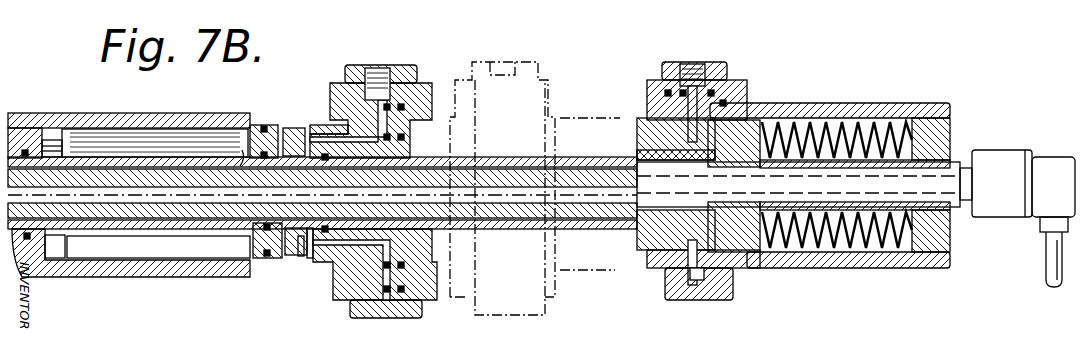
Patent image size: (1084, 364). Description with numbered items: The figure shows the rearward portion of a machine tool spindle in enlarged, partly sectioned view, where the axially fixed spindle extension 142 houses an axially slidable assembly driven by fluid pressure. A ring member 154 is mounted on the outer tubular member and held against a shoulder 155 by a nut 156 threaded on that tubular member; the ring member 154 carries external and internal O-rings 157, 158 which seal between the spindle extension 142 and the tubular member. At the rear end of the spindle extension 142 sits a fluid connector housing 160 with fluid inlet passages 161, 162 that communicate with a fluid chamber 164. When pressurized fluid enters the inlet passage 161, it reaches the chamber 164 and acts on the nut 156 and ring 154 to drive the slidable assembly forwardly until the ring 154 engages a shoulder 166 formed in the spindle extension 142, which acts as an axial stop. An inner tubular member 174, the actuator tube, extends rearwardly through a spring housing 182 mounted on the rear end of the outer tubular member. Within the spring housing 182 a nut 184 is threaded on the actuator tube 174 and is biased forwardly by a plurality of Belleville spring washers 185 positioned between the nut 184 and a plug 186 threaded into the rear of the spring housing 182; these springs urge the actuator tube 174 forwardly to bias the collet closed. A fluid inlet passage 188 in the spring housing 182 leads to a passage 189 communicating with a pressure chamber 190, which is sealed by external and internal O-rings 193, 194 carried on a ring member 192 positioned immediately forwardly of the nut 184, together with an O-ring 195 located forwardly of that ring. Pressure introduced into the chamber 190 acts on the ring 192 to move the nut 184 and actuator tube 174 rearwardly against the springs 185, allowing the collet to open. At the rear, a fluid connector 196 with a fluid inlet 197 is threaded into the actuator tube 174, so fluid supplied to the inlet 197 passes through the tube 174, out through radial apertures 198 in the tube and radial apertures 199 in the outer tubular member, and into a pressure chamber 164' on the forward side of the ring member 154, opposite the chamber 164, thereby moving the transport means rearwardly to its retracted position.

The spindle extension 142 is at (135, 277).
The shoulder 166 is at (82, 128).
The pressure chamber 164' is at (155, 123).
The radial apertures 199 is at (222, 149).
The radial apertures 198 is at (238, 232).
The inner tubular member 174 is at (958, 205).
The shoulder 155 is at (256, 126).
The ring member 154 is at (290, 128).
The fluid inlet passage 162 is at (325, 125).
The fluid connector housing 160 is at (428, 66).
The fluid inlet passage 161 is at (385, 72).
The internal O-ring 158 is at (258, 262).
The external O-ring 157 is at (290, 260).
The fluid chamber 164 is at (319, 266).
The nut 156 is at (300, 264).
The fluid inlet passage 188 is at (697, 70).
The passage 189 is at (648, 135).
The O-ring 195 is at (650, 152).
The pressure chamber 190 is at (740, 100).
The external O-ring 193 is at (735, 118).
The internal O-ring 194 is at (655, 225).
The nut 184 is at (755, 252).
The ring member 192 is at (735, 288).
The spring housing 182 is at (828, 102).
The Belleville spring washers 185 is at (862, 122).
The plug 186 is at (985, 120).
The fluid connector 196 is at (1018, 178).
The fluid inlet 197 is at (1050, 272).